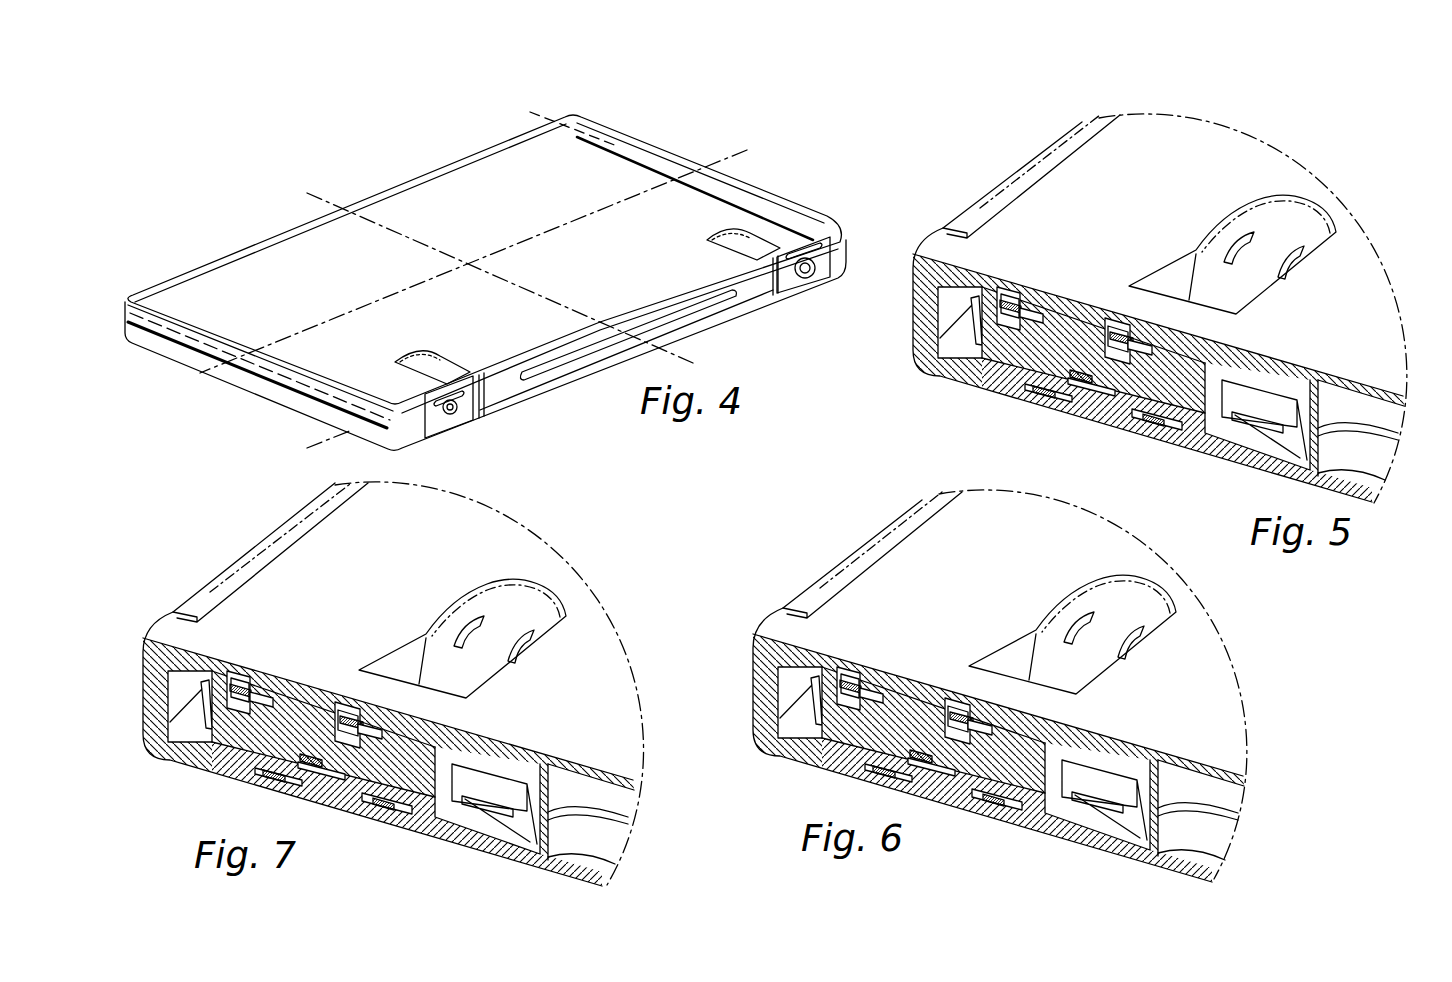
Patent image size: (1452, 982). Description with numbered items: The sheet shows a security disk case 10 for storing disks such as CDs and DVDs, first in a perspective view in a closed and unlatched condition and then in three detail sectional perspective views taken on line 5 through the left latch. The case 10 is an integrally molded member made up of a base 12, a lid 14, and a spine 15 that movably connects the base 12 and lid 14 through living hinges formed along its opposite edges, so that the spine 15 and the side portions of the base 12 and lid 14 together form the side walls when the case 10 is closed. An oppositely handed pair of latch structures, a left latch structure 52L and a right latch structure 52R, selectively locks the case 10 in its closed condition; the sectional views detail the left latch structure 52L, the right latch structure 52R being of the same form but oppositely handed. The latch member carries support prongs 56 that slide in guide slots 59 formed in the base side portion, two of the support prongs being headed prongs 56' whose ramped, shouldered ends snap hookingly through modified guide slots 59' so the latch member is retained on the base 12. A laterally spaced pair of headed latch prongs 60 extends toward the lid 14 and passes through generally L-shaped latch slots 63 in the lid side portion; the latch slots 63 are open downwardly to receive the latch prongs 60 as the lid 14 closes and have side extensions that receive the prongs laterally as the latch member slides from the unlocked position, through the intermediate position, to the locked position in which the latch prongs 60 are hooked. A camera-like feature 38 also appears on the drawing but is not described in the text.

In FIG. 4, the security disk case 10 is at (307, 193).
In FIG. 4, the base 12 is at (530, 112).
In FIG. 5, the base 12 is at (1247, 466).
In FIG. 6, the base 12 is at (998, 728).
In FIG. 7, the base 12 is at (388, 737).
In FIG. 4, the lid 14 is at (255, 246).
In FIG. 5, the lid 14 is at (995, 192).
In FIG. 6, the lid 14 is at (870, 555).
In FIG. 7, the lid 14 is at (270, 552).
In FIG. 4, the spine 15 is at (690, 128).
In FIG. 4, the section line 5- 5 is at (500, 353).
In FIG. 4, the camera / sensor bump 38 is at (402, 362).
In FIG. 4, the left latch structure 52L is at (462, 434).
In FIG. 5, the left latch structure 52L is at (1164, 496).
In FIG. 6, the left latch structure 52L is at (1029, 815).
In FIG. 7, the left latch structure 52L is at (435, 817).
In FIG. 4, the right latch structure 52R is at (814, 292).
In FIG. 5, the support prong 56 is at (1057, 366).
In FIG. 6, the support prong 56 is at (898, 746).
In FIG. 7, the support prong 56 is at (352, 771).
In FIG. 5, the headed support prong 56' is at (1098, 422).
In FIG. 6, the headed support prong 56' is at (938, 802).
In FIG. 7, the headed support prong 56' is at (328, 807).
In FIG. 5, the guide slot 59 is at (1119, 393).
In FIG. 6, the guide slot 59 is at (961, 773).
In FIG. 7, the guide slot 59 is at (300, 754).
In FIG. 5, the modified guide slot 59' is at (1085, 428).
In FIG. 6, the modified guide slot 59' is at (928, 808).
In FIG. 7, the modified guide slot 59' is at (326, 792).
In FIG. 5, the latch prong 60 is at (1015, 287).
In FIG. 6, the latch prong 60 is at (898, 686).
In FIG. 7, the latch prong 60 is at (323, 696).
In FIG. 5, the latch slot 63 is at (1035, 312).
In FIG. 6, the latch slot 63 is at (949, 689).
In FIG. 7, the latch slot 63 is at (296, 682).